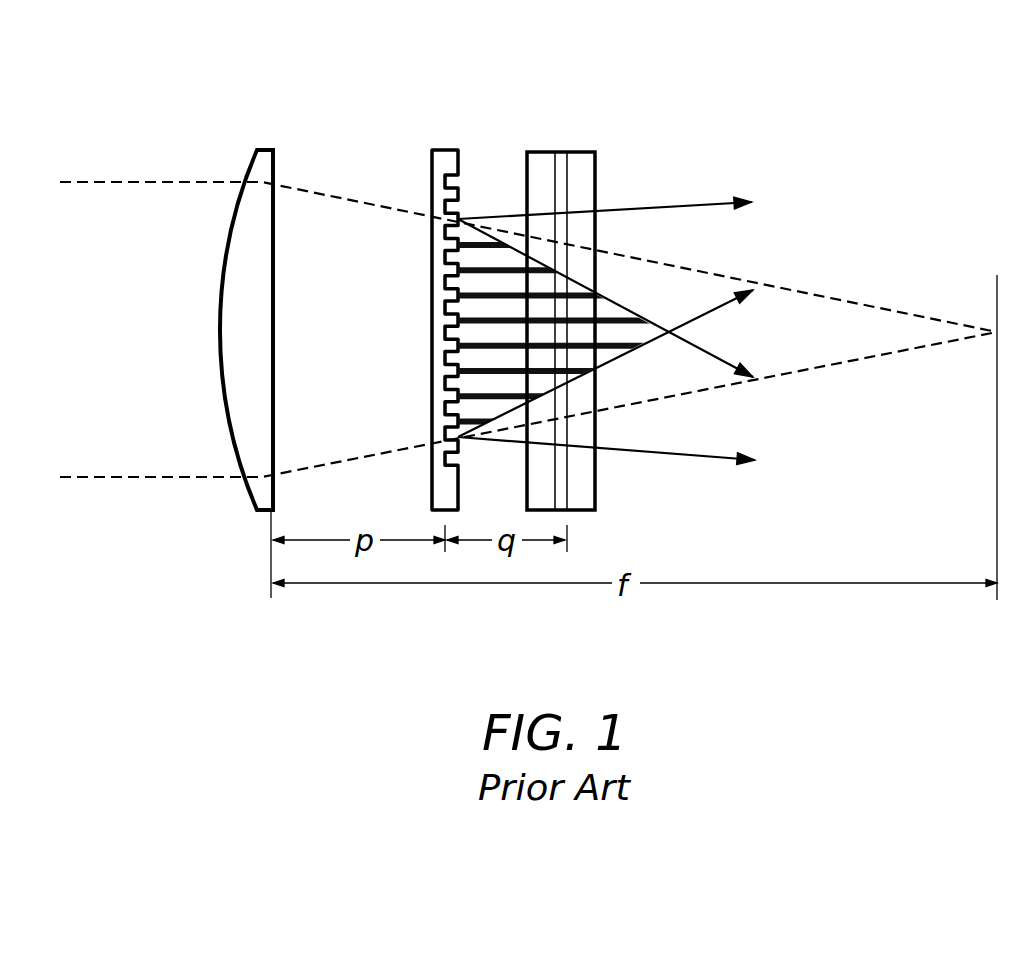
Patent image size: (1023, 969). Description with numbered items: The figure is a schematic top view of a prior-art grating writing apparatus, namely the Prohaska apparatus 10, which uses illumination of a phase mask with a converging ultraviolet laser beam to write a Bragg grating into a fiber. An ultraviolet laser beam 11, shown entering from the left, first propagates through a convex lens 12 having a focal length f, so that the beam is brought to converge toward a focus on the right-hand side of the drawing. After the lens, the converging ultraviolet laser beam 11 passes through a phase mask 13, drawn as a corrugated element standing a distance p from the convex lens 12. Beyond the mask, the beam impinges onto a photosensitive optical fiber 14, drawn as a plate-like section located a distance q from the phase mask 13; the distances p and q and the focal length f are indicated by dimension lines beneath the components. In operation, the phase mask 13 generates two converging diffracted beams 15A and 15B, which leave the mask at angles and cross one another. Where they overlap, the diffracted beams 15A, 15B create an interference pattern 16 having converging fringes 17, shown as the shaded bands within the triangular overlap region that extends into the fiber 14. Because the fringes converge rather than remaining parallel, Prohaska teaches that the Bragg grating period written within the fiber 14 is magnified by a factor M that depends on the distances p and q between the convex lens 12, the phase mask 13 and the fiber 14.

The Prohaska apparatus 10 is at (808, 54).
The ultraviolet laser beam 11 is at (172, 182).
The convex lens 12 is at (256, 151).
The phase mask 13 is at (431, 178).
The photosensitive optical fiber 14 is at (597, 165).
The converging diffracted beam 15A is at (658, 243).
The converging diffracted beam 15B is at (696, 430).
The interference pattern 16 is at (619, 303).
The converging fringes 17 is at (478, 272).